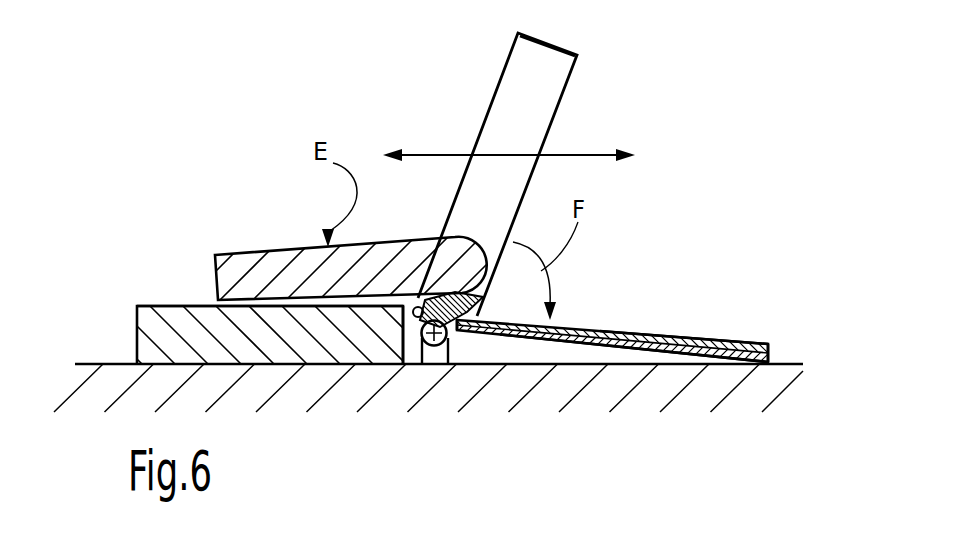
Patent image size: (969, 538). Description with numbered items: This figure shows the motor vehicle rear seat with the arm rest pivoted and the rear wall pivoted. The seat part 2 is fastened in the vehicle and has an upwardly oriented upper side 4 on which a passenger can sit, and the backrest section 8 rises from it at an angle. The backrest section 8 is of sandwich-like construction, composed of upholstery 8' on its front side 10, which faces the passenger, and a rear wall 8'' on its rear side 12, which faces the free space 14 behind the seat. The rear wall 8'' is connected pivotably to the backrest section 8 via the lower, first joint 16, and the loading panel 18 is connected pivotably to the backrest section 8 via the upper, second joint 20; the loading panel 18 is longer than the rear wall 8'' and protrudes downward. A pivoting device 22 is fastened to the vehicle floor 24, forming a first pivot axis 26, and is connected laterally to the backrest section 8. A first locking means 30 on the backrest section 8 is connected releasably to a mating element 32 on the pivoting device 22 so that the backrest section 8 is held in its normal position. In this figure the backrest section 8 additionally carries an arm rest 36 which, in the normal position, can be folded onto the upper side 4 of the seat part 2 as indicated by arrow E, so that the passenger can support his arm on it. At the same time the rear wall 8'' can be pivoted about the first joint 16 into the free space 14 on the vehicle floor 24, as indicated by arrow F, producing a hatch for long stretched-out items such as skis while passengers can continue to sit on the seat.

The seat part 2 is at (163, 328).
The upper side 4 is at (188, 304).
The backrest section 8 is at (545, 158).
The upholstery 8' is at (561, 33).
The rear wall 8'' is at (612, 298).
The front side 10 is at (487, 107).
The rear side 12 is at (625, 333).
The free space 14 is at (687, 214).
The first joint 16 is at (461, 332).
The loading panel 18 is at (677, 337).
The second joint 20 is at (769, 355).
The pivoting device 22 is at (437, 355).
The vehicle floor 24 is at (568, 366).
The first pivot axis 26 is at (416, 318).
The first locking means 30 is at (420, 300).
The mating element 32 is at (368, 345).
The arm rest 36 is at (298, 276).